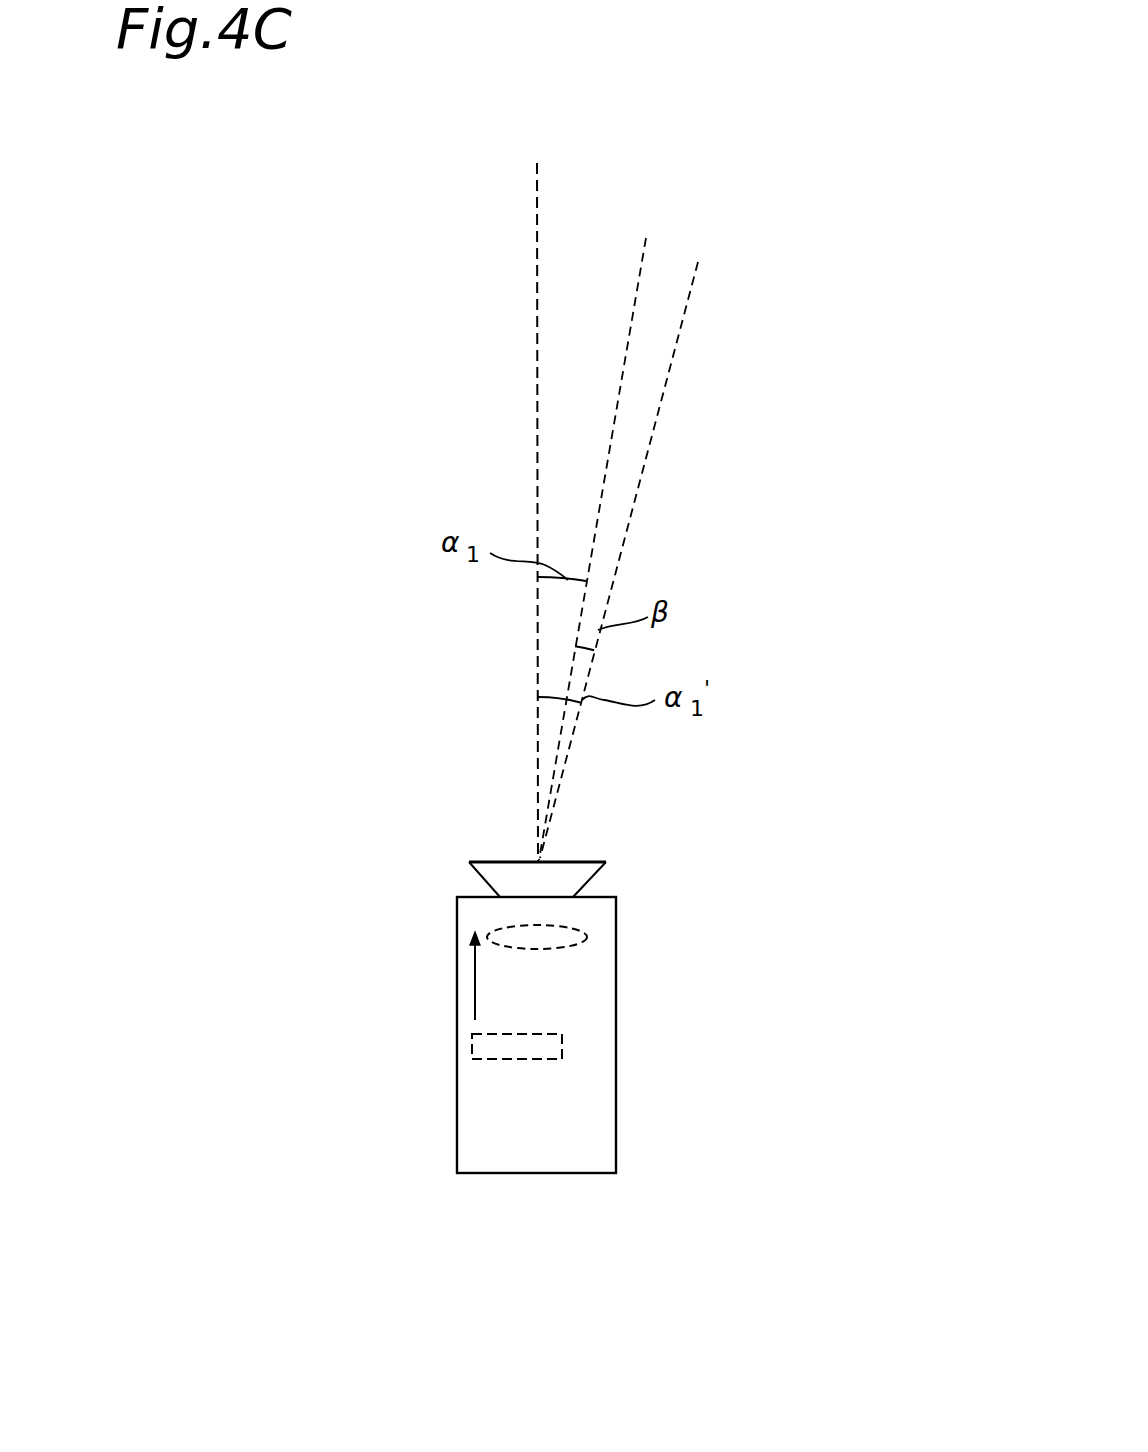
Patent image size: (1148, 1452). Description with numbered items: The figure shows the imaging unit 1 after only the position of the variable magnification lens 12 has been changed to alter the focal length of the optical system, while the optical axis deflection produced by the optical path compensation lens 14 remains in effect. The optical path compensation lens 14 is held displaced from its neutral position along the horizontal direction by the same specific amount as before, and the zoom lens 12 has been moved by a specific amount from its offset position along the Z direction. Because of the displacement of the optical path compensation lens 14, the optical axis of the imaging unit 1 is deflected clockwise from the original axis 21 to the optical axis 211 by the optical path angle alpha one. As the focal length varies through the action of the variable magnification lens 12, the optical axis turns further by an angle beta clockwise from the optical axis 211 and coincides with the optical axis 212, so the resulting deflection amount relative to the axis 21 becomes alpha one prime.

The imaging unit 1 is at (548, 1188).
The variable magnification lens 12 is at (560, 935).
The optical path compensation lens 14 is at (487, 1050).
The axis 21 is at (526, 286).
The optical axis 211 is at (652, 272).
The optical axis 212 is at (652, 477).